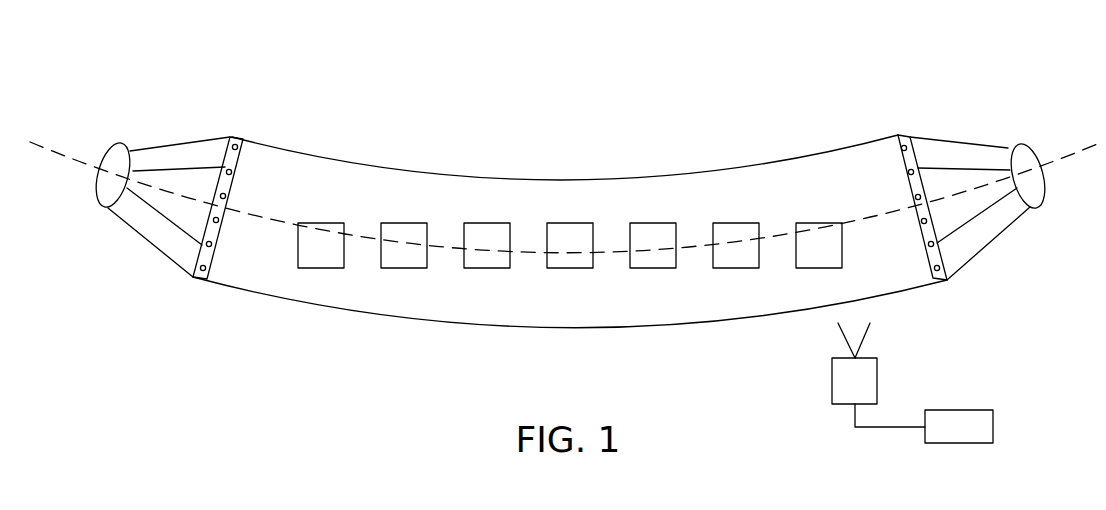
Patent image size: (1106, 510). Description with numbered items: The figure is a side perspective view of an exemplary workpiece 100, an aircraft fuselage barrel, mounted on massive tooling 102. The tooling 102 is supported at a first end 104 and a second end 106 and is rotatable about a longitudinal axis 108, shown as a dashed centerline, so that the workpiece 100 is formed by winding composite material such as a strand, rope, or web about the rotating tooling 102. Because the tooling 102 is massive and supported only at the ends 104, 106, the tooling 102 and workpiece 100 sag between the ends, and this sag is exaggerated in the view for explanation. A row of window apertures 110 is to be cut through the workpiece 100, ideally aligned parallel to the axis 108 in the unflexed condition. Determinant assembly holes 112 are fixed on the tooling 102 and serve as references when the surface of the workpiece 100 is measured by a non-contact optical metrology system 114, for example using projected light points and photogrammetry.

The workpiece 100 is at (628, 178).
The tooling 102 is at (182, 134).
The first end 104 is at (108, 150).
The second end 106 is at (1033, 153).
The longitudinal axis 108 is at (78, 162).
The window apertures 110 is at (321, 223).
The determinant assembly holes 112 is at (236, 143).
The optical metrology system 114 is at (961, 374).